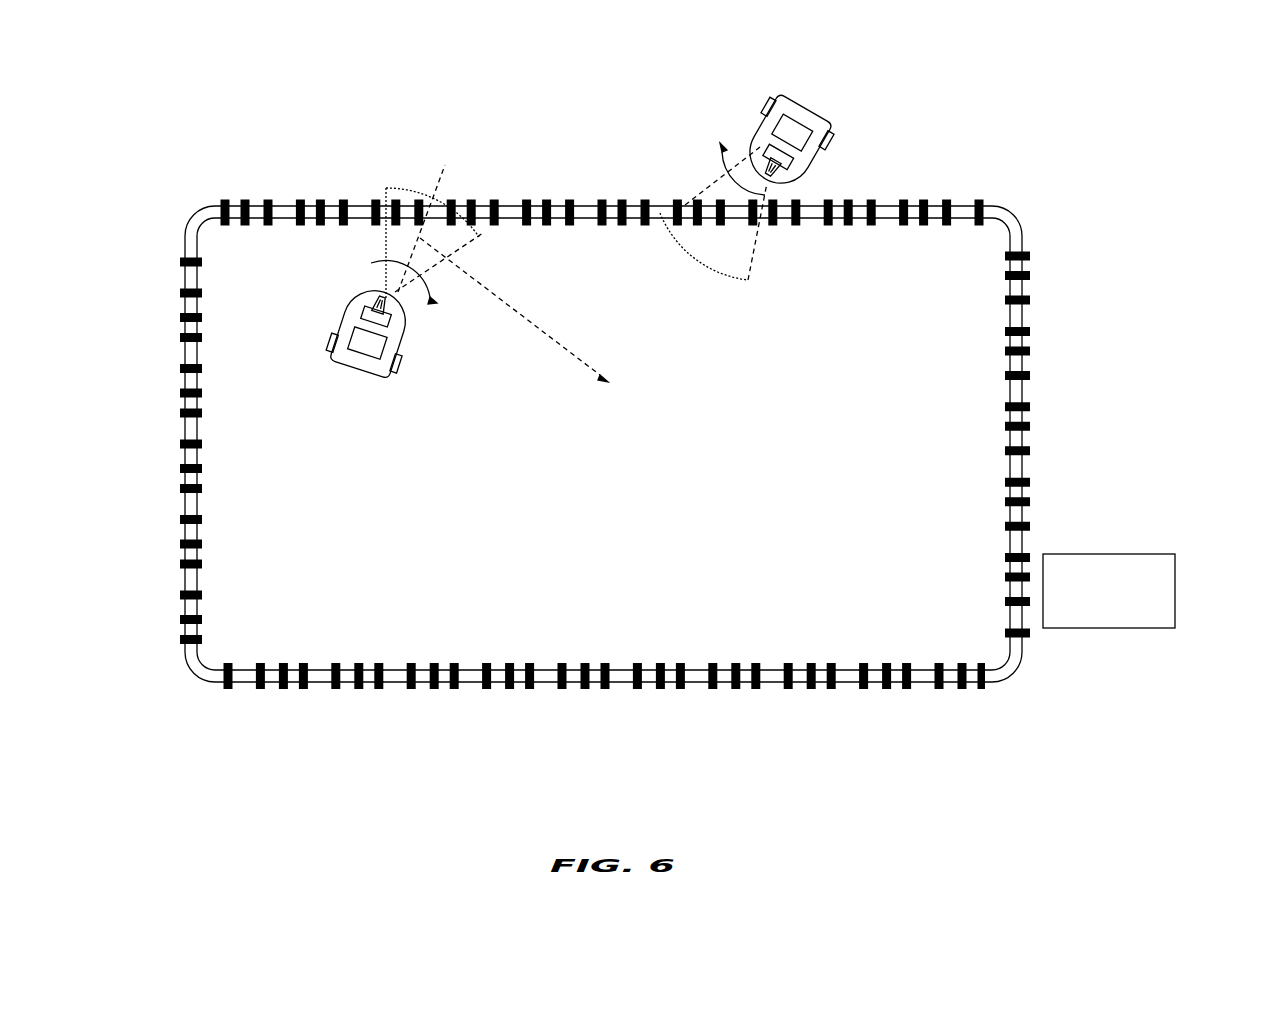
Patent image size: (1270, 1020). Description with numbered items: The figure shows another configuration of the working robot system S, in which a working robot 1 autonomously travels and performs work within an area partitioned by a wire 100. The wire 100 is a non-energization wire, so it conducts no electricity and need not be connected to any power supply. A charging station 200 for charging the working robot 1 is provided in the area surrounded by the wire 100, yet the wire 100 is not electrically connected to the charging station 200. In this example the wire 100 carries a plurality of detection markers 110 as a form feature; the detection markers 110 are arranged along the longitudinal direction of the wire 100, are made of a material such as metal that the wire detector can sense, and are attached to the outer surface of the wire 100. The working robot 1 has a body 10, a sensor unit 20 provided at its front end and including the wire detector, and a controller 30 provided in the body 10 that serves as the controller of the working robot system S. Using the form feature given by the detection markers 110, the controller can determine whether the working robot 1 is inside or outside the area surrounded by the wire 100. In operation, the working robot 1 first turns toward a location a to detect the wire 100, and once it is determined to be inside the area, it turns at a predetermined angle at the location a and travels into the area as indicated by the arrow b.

The working robot system S is at (120, 172).
The working robot 1 is at (603, 238).
The body 10 is at (610, 238).
The sensor unit 20 is at (410, 326).
The controller 30 is at (362, 366).
The wire 100 is at (1014, 676).
The detection markers 110 is at (301, 199).
The charging station 200 is at (1176, 591).
The location a is at (427, 223).
The arrow b is at (514, 310).